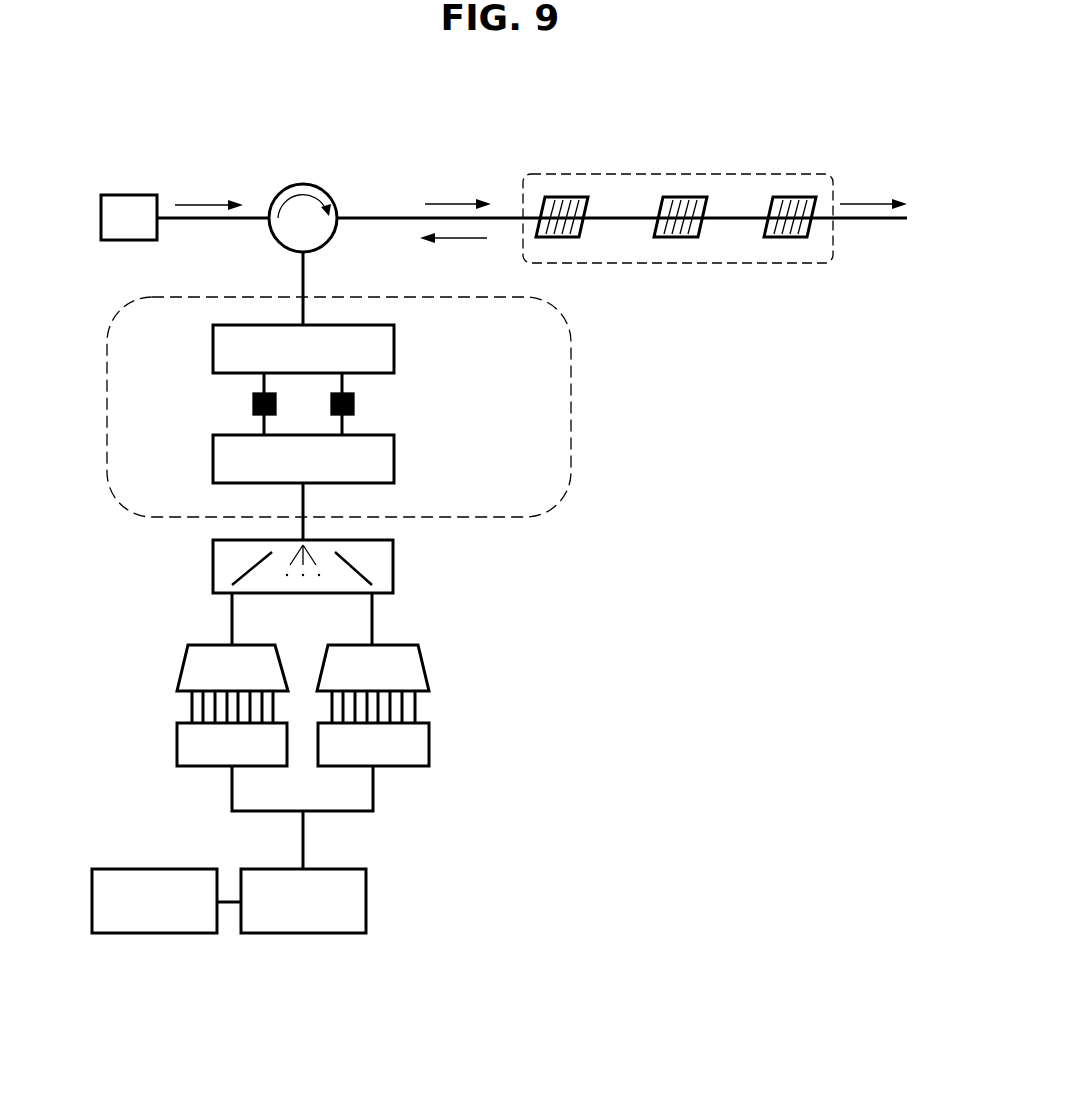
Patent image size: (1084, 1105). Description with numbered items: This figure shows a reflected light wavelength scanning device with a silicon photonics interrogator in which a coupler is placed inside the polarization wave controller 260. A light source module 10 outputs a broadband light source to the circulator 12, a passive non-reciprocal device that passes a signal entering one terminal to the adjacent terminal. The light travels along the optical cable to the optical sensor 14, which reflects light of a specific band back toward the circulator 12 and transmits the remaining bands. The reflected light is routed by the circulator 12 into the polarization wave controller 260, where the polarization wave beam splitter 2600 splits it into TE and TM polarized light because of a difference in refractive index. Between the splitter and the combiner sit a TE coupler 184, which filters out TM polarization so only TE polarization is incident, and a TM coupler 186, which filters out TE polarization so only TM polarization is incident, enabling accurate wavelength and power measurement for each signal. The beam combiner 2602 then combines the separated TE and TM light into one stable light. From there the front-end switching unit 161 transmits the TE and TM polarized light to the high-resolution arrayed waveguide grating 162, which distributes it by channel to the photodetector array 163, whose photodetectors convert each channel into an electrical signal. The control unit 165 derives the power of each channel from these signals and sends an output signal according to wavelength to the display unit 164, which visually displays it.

The light source module 10 is at (130, 195).
The circulator 12 is at (303, 184).
The optical sensor 14 is at (674, 174).
The polarization wave controller 260 is at (571, 408).
The polarization wave beam splitter 2600 is at (394, 340).
The beam combiner 2602 is at (394, 452).
The TE coupler 184 is at (253, 400).
The TM coupler 186 is at (354, 400).
The front-end switching unit 161 is at (393, 562).
The high-resolution arrayed waveguide grating 162 is at (418, 665).
The photodetector array 163 is at (429, 740).
The display unit 164 is at (152, 869).
The control unit 165 is at (366, 900).